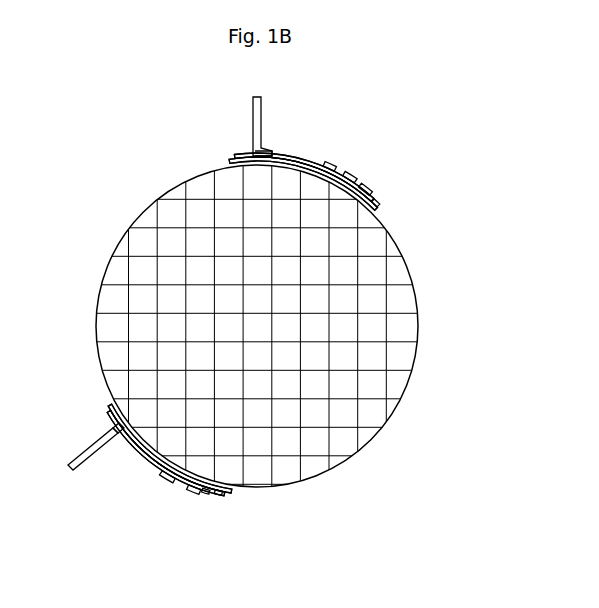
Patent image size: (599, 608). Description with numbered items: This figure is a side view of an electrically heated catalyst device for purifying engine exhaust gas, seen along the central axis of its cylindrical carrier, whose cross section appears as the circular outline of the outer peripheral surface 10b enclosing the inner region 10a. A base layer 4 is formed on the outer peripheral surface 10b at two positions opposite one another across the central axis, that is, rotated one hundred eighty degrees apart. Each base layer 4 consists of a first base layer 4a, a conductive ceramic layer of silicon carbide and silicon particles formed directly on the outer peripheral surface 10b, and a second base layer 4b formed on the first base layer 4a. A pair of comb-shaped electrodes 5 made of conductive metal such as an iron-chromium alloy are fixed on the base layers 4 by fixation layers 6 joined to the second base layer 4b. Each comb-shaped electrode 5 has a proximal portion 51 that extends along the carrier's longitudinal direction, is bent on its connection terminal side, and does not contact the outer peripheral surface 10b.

The base layer 4 is at (442, 172).
The first base layer 4a is at (376, 211).
The second base layer 4b is at (373, 201).
The comb-shaped electrode 5 is at (261, 100).
The proximal portion 51 is at (268, 151).
The fixation layer 6 is at (352, 174).
The die grid region of wafer 10a is at (373, 357).
The outer peripheral surface 10b is at (414, 288).